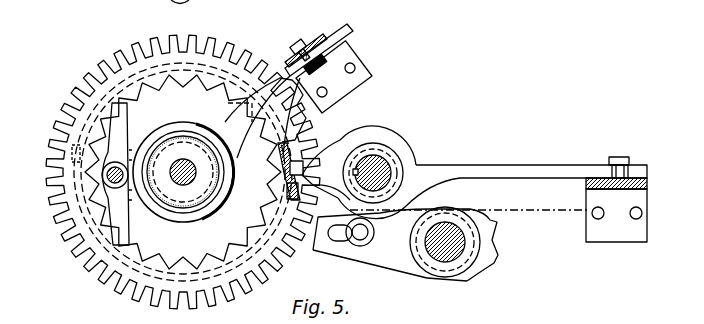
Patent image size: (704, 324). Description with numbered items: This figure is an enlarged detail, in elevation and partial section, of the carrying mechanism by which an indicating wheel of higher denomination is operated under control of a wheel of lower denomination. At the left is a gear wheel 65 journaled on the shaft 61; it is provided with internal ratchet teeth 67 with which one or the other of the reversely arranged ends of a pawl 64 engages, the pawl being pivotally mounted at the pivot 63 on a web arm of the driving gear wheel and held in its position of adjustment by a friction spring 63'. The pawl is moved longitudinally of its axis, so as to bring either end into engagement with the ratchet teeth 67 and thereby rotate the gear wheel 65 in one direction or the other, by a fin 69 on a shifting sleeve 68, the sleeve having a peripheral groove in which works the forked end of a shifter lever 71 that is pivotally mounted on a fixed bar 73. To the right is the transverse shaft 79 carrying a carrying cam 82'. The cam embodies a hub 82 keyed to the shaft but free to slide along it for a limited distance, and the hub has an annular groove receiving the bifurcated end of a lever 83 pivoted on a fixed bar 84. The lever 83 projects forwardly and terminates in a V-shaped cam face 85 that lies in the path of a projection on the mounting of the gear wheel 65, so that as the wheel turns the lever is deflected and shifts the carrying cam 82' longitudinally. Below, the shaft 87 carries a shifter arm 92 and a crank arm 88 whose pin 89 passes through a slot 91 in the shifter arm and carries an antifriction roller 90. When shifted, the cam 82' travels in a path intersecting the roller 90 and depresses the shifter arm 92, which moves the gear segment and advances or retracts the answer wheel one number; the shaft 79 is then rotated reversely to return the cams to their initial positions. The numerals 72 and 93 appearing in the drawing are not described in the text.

The shaft 61 is at (188, 178).
The pivot 63 is at (66, 178).
The friction spring 63' is at (183, 172).
The pawl 64 is at (118, 215).
The gear wheel 65 is at (113, 80).
The internal ratchet teeth 67 is at (213, 78).
The shifting sleeve 68 is at (196, 207).
The fin 69 is at (217, 205).
The shifter lever 71 is at (353, 30).
The adjusting screw 72 is at (298, 42).
The fixed bar 73 is at (320, 37).
The transverse shaft 79 is at (396, 166).
The hub 82 is at (381, 157).
The carrying cam 82' is at (311, 186).
The lever 83 is at (531, 170).
The fixed bar 84 is at (648, 183).
The V-shaped cam face 85 is at (300, 158).
The shaft 87 is at (464, 272).
The crank arm 88 is at (380, 252).
The pin 89 is at (360, 240).
The antifriction roller 90 is at (428, 233).
The slot 91 is at (340, 240).
The shifter arm 92 is at (319, 246).
The lever edge 93 is at (413, 274).